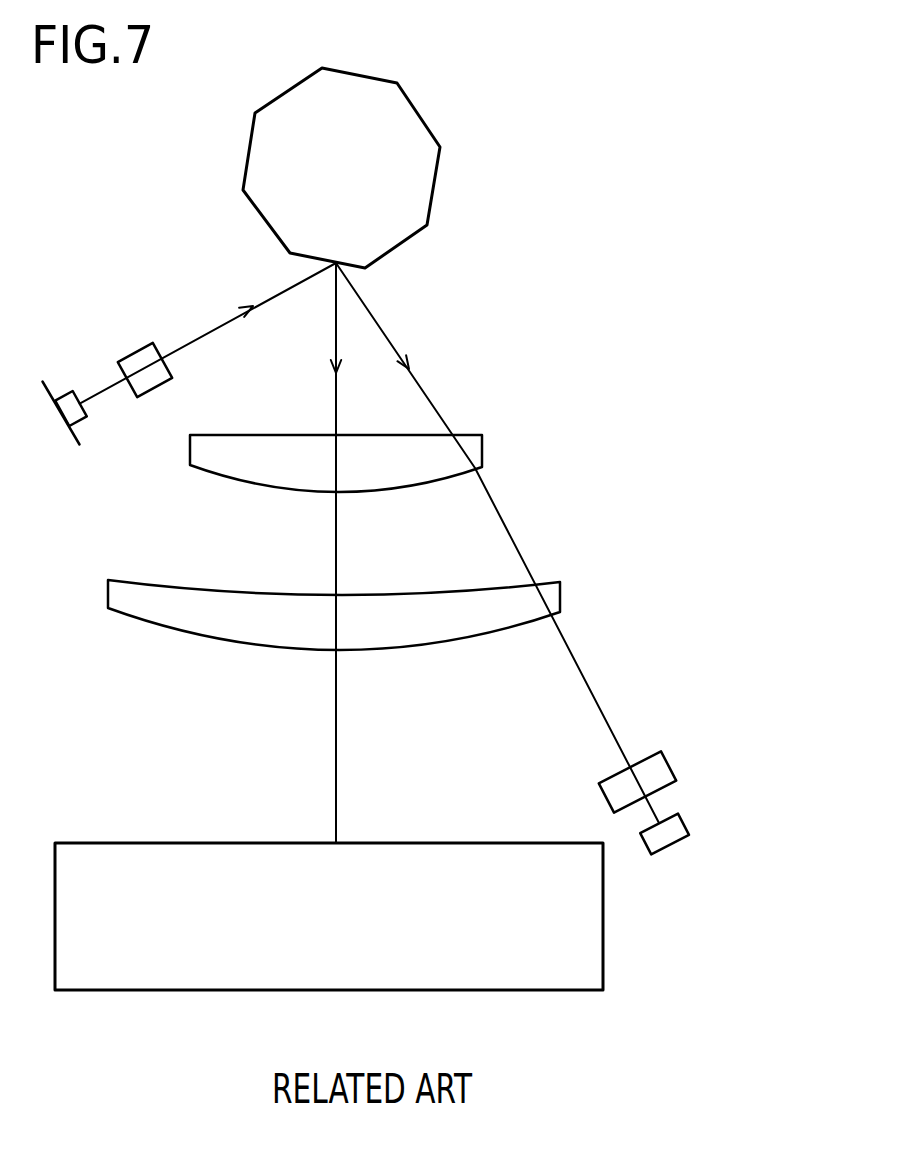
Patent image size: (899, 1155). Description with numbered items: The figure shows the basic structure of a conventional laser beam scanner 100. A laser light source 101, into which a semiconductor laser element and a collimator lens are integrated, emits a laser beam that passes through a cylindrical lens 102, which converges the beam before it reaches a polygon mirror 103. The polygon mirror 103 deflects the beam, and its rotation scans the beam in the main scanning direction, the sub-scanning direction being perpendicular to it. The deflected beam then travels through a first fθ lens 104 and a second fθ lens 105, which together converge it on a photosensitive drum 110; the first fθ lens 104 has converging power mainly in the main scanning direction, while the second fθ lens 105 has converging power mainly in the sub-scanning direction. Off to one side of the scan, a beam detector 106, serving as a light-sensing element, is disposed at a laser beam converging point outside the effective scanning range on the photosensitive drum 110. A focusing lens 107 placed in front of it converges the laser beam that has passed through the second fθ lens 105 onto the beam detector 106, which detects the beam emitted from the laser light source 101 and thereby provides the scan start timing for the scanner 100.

The laser beam scanner 100 is at (600, 255).
The laser light source 101 is at (66, 393).
The cylindrical lens 102 is at (146, 346).
The polygon mirror 103 is at (422, 120).
The first fθ lens 104 is at (483, 452).
The second fθ lens 105 is at (561, 597).
The beam detector 106 is at (687, 823).
The focusing lens 107 is at (672, 763).
The photosensitive drum 110 is at (165, 843).